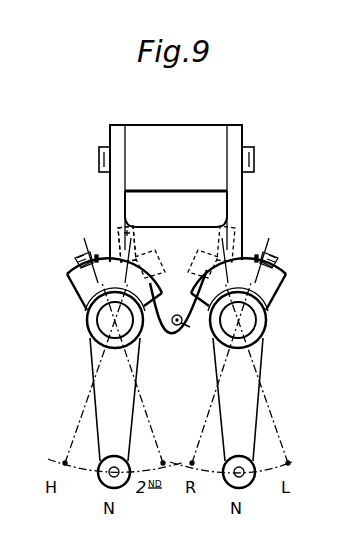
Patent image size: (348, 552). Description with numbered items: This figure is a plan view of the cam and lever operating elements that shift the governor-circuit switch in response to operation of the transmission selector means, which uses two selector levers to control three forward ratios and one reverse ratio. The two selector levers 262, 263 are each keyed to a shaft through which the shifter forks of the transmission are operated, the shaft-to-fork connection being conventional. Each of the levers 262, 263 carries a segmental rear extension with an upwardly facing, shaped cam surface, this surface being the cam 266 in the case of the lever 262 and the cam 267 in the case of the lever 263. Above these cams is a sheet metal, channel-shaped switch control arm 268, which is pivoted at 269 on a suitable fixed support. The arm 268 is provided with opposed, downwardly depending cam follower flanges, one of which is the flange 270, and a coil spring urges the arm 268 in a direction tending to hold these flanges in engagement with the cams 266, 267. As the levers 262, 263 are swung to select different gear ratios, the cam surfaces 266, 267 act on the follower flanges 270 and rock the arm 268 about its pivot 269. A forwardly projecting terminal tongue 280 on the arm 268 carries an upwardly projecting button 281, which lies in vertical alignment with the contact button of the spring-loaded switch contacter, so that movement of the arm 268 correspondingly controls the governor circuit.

The selector lever 262 is at (110, 373).
The selector lever 263 is at (248, 382).
The cam surface 266 is at (70, 262).
The cam surface 267 is at (278, 255).
The switch control arm 268 is at (243, 222).
The pivot 269 is at (253, 147).
The cam follower flange 270 is at (110, 232).
The terminal tongue 280 is at (168, 336).
The button 281 is at (181, 326).